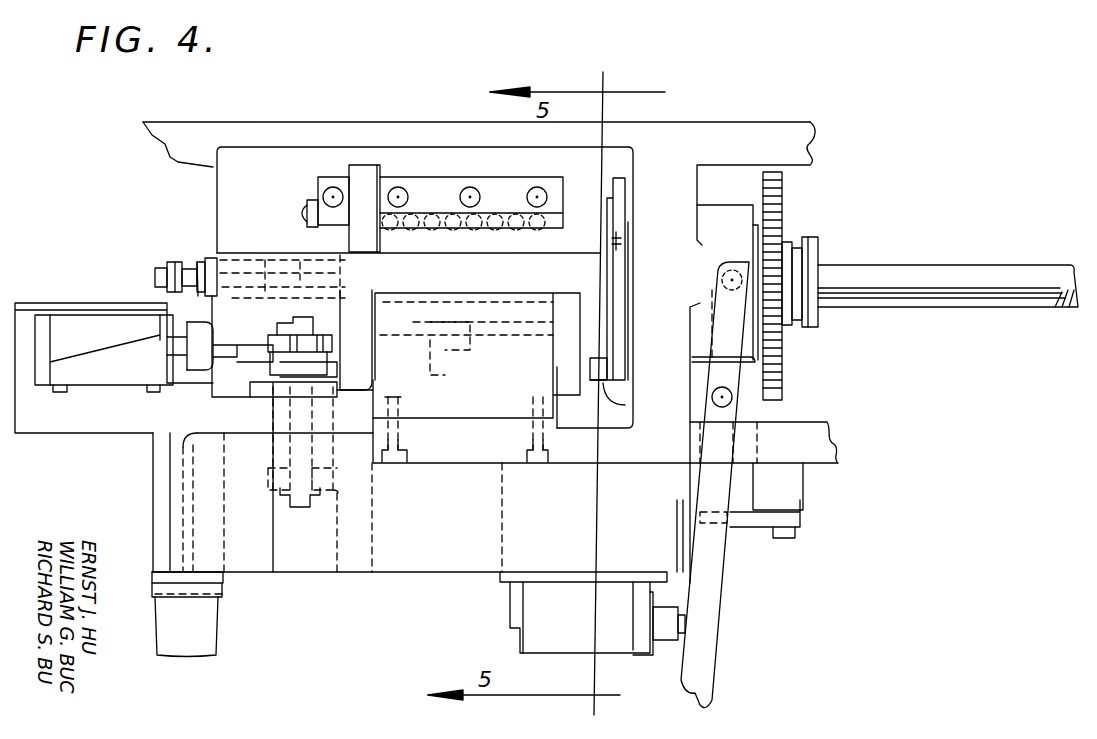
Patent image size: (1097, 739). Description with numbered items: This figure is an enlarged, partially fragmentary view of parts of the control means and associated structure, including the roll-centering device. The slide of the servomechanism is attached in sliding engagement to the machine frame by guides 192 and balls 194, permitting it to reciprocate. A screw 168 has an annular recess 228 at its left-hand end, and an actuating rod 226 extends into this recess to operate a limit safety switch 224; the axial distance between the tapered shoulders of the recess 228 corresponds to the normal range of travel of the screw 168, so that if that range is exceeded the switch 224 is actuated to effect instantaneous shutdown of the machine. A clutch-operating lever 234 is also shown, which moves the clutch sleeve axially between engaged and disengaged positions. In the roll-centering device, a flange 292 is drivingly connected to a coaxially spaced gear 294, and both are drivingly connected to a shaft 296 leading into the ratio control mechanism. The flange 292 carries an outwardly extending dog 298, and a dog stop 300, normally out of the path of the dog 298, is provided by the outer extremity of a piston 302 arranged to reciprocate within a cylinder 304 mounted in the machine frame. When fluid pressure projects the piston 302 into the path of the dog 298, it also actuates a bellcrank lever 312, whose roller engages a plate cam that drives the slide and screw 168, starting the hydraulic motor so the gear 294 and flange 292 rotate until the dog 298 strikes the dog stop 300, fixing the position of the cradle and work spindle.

The screw 168 is at (155, 276).
The guides 192 is at (414, 184).
The balls 194 is at (494, 213).
The limit safety switch 224 is at (224, 595).
The actuating rod 226 is at (198, 262).
The annular recess 228 is at (185, 262).
The clutch-operating lever 234 is at (712, 603).
The flange 292 is at (620, 190).
The gear 294 is at (782, 203).
The shaft 296 is at (958, 273).
The dog 298 is at (625, 405).
The dog stop 300 is at (580, 348).
The piston 302 is at (330, 323).
The cylinder 304 is at (503, 299).
The bellcrank lever 312 is at (267, 341).